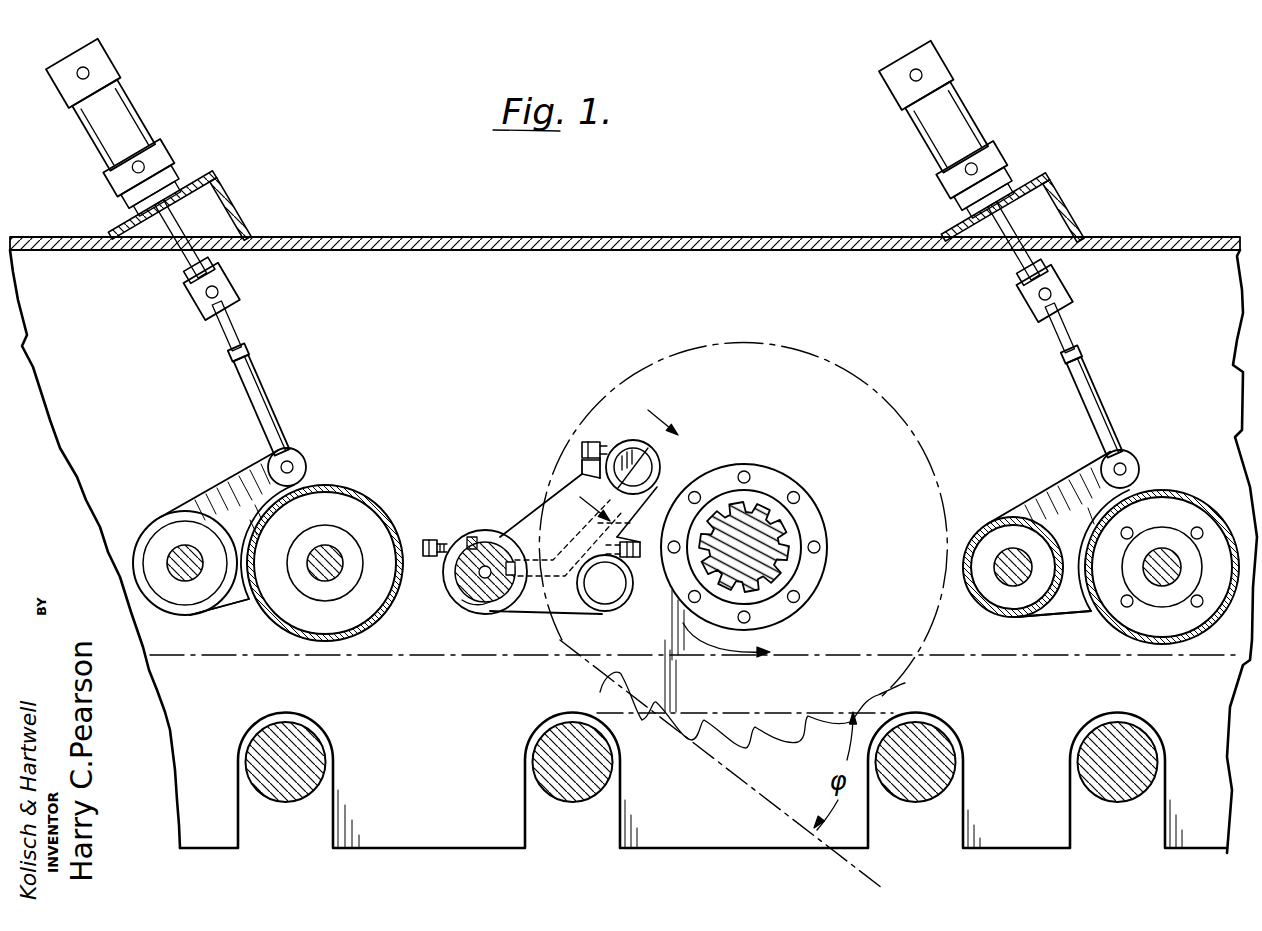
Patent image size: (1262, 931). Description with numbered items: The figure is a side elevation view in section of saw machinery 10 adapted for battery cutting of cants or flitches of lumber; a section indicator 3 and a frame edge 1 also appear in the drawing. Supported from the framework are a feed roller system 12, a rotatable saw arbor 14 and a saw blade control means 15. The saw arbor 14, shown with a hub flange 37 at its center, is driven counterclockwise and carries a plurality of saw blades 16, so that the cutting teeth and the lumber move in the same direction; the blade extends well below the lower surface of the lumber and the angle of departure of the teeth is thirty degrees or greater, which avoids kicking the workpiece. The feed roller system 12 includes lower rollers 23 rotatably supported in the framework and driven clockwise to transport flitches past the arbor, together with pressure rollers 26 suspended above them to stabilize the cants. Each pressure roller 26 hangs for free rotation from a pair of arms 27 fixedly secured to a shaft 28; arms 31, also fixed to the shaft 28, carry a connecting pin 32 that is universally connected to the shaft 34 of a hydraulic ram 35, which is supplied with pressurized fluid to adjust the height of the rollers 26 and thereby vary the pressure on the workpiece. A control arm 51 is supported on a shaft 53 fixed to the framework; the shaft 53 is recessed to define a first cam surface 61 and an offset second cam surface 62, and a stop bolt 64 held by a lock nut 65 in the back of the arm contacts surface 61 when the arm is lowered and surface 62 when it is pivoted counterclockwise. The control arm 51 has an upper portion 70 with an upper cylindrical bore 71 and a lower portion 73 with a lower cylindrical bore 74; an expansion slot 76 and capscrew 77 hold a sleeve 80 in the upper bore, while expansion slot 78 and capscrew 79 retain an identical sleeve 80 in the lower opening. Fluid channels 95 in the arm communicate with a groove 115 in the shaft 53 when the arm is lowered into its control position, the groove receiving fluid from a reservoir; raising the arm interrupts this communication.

The frame 1 is at (44, 377).
The saw machinery 10 is at (430, 168).
The feed roller system 12 is at (218, 714).
The saw arbor 14 is at (783, 527).
The saw blade control means 15 is at (518, 525).
The saw blade 16 is at (855, 386).
The lower roller 23 is at (538, 765).
The pressure roller 26 is at (337, 497).
The arm 27 is at (238, 601).
The shaft 28 is at (180, 546).
The arm 31 is at (227, 497).
The connecting pin 32 is at (248, 391).
The shaft 34 is at (176, 213).
The hydraulic ram 35 is at (163, 148).
The hub flange 37 is at (830, 558).
The control arm 51 is at (540, 603).
The shaft 53 is at (470, 600).
The first cam surface 61 is at (483, 538).
The second cam surface 62 is at (460, 578).
The stop bolt 64 is at (476, 538).
The lock nut 65 is at (437, 540).
The upper portion 70 is at (556, 506).
The upper cylindrical bore 71 is at (654, 452).
The lower portion 73 is at (575, 618).
The lower cylindrical bore 74 is at (613, 614).
The expansion slot 76 is at (610, 443).
The capscrew 77 is at (586, 442).
The expansion slot 78 is at (605, 583).
The capscrew 79 is at (633, 560).
The sleeve 80 is at (648, 470).
The fluid channels 95 is at (622, 523).
The groove 115 is at (488, 612).
The section line 3- 3 is at (620, 463).